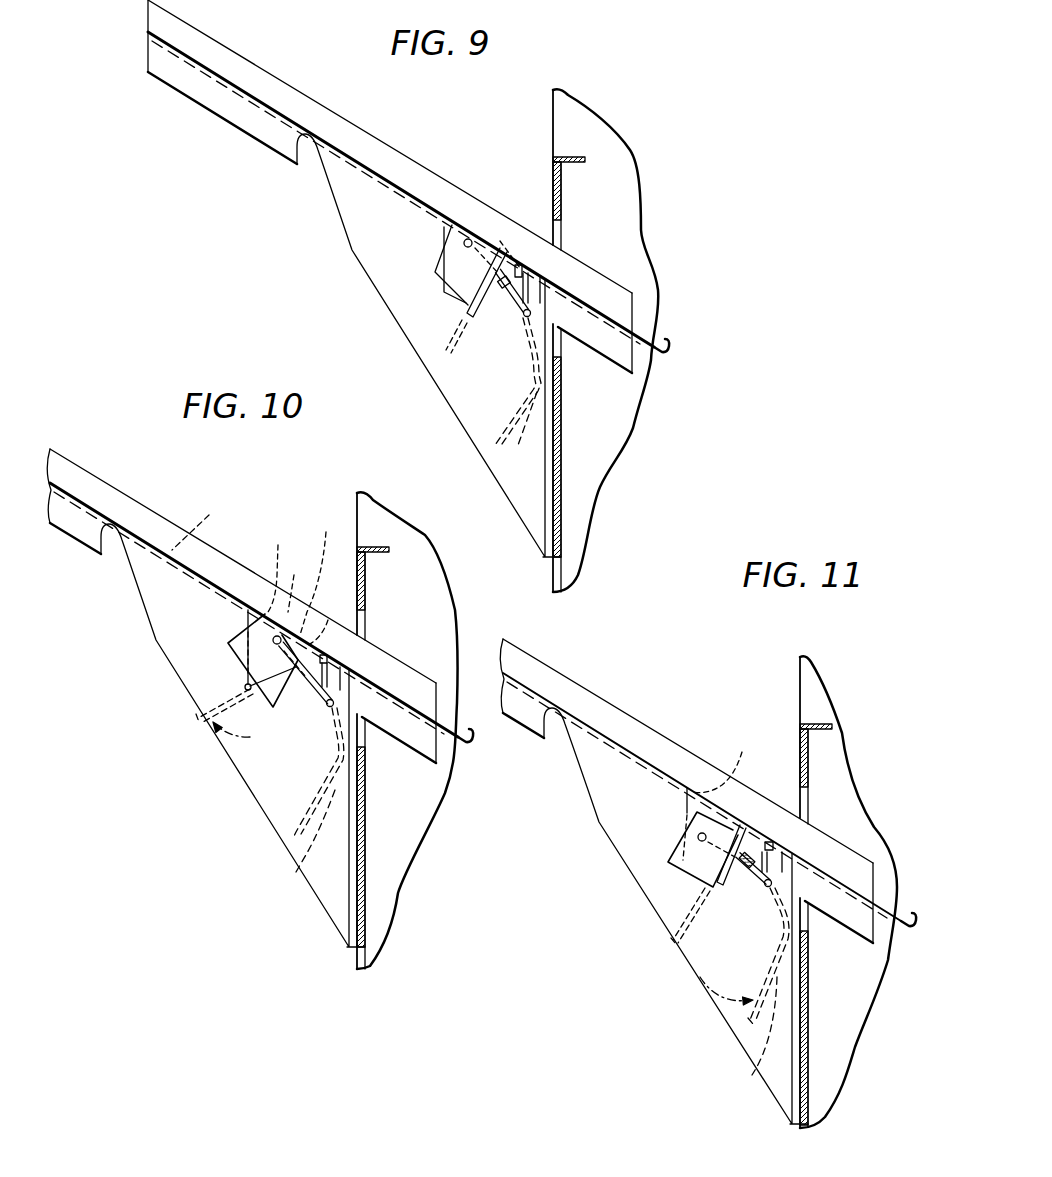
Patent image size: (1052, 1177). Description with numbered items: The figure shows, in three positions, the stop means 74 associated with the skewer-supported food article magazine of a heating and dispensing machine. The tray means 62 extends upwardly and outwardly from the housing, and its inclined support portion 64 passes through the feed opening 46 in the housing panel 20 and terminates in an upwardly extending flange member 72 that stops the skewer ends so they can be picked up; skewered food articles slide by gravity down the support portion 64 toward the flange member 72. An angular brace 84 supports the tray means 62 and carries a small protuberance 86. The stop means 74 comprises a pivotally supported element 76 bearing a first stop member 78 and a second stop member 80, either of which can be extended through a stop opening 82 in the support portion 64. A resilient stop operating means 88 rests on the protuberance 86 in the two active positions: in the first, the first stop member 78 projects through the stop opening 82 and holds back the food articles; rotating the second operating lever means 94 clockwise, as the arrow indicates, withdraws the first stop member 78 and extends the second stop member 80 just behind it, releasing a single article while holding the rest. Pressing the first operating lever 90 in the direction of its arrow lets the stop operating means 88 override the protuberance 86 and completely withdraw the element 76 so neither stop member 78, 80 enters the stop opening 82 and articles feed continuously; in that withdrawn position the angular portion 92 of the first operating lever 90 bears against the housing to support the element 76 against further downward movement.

In FIG. 9, the vehicle body panel 20 is at (567, 125).
In FIG. 10, the vehicle body panel 20 is at (368, 513).
In FIG. 11, the vehicle body panel 20 is at (815, 680).
In FIG. 9, the feed opening 46 is at (568, 226).
In FIG. 10, the feed opening 46 is at (370, 618).
In FIG. 11, the feed opening 46 is at (811, 802).
In FIG. 9, the tray means 62 is at (203, 122).
In FIG. 10, the tray means 62 is at (82, 562).
In FIG. 11, the tray means 62 is at (603, 688).
In FIG. 10, the support portion 64 is at (203, 520).
In FIG. 9, the flange member 72 is at (672, 350).
In FIG. 10, the flange member 72 is at (468, 735).
In FIG. 11, the flange member 72 is at (918, 919).
In FIG. 9, the stop means 74 is at (431, 272).
In FIG. 9, the pivotally supported element 76 is at (455, 262).
In FIG. 9, the first stop member 78 is at (500, 241).
In FIG. 10, the first stop member 78 is at (312, 589).
In FIG. 10, the second stop member 80 is at (278, 612).
In FIG. 10, the stop opening 82 is at (297, 580).
In FIG. 11, the stop opening 82 is at (725, 760).
In FIG. 9, the angular brace 84 is at (352, 215).
In FIG. 10, the angular brace 84 is at (273, 790).
In FIG. 11, the angular brace 84 is at (600, 830).
In FIG. 9, the protuberance 86 is at (502, 298).
In FIG. 10, the protuberance 86 is at (309, 698).
In FIG. 11, the protuberance 86 is at (731, 876).
In FIG. 10, the stop operating means 88 is at (316, 658).
In FIG. 9, the first operating lever 90 is at (518, 404).
In FIG. 10, the first operating lever 90 is at (305, 868).
In FIG. 11, the first operating lever 90 is at (752, 1075).
In FIG. 11, the angular portion 92 is at (778, 941).
In FIG. 10, the second operating lever means 94 is at (210, 712).
In FIG. 11, the second operating lever means 94 is at (688, 917).